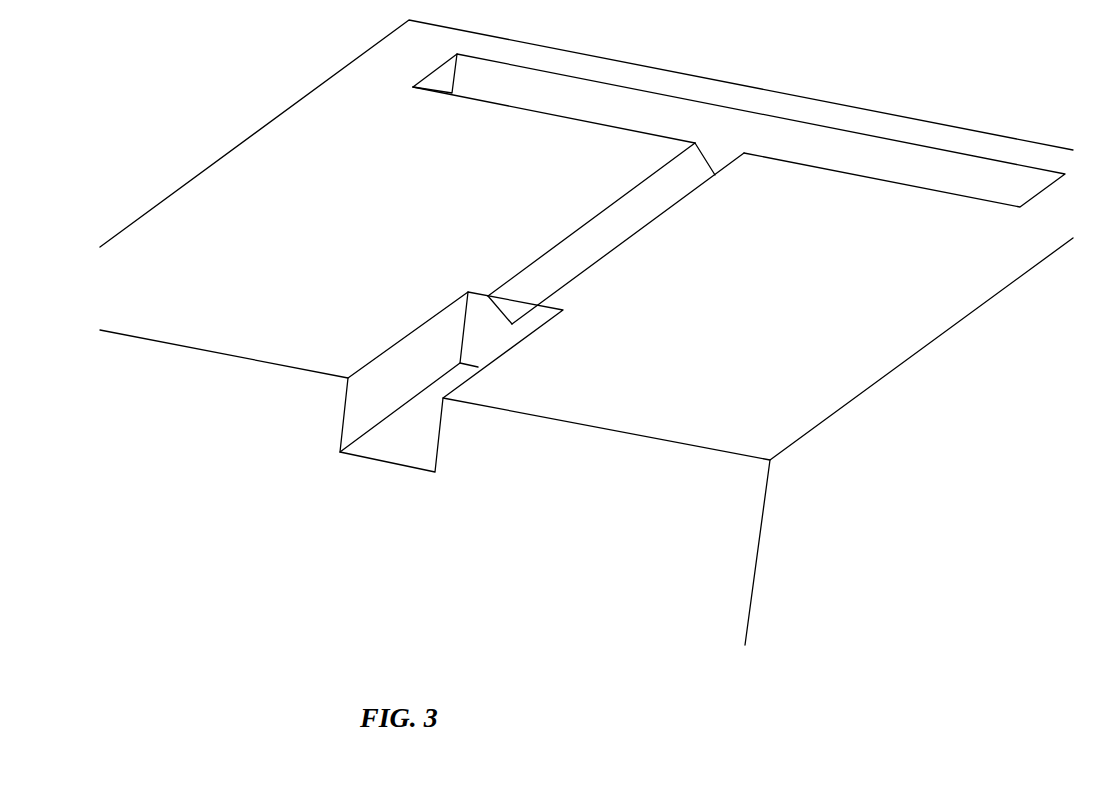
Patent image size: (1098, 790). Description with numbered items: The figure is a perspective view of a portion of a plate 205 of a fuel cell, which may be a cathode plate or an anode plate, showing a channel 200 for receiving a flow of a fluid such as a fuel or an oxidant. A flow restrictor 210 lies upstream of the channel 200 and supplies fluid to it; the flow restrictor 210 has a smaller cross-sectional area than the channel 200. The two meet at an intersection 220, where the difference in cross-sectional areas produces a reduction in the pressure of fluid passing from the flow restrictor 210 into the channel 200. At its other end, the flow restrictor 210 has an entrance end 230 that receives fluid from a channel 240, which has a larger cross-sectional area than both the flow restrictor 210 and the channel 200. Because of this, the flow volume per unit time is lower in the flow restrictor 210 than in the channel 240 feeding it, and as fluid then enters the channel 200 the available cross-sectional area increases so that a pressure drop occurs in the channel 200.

The channel 200 is at (391, 459).
The plate 205 is at (756, 364).
The flow restrictor 210 is at (596, 267).
The intersection 220 is at (484, 330).
The entrance end 230 is at (727, 161).
The channel 240 is at (737, 109).